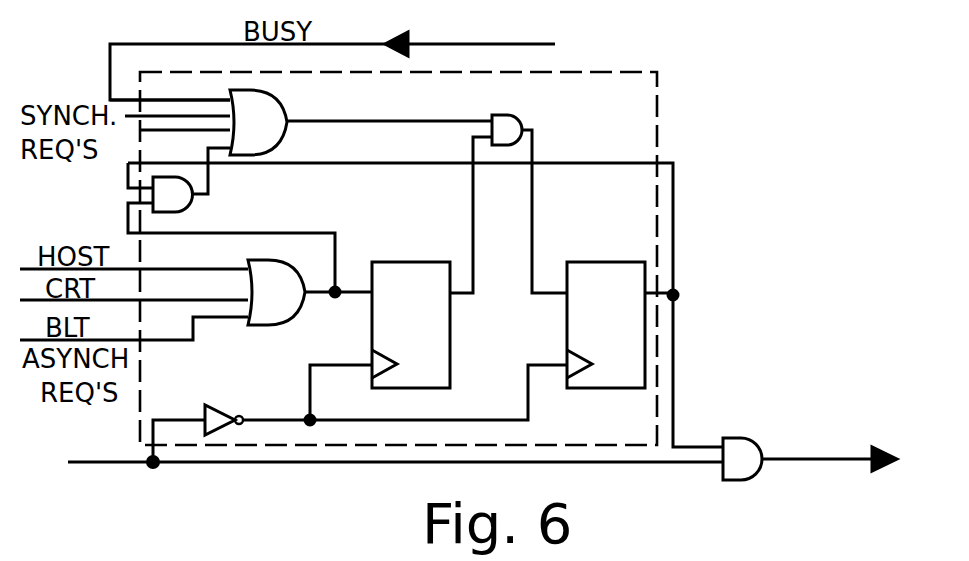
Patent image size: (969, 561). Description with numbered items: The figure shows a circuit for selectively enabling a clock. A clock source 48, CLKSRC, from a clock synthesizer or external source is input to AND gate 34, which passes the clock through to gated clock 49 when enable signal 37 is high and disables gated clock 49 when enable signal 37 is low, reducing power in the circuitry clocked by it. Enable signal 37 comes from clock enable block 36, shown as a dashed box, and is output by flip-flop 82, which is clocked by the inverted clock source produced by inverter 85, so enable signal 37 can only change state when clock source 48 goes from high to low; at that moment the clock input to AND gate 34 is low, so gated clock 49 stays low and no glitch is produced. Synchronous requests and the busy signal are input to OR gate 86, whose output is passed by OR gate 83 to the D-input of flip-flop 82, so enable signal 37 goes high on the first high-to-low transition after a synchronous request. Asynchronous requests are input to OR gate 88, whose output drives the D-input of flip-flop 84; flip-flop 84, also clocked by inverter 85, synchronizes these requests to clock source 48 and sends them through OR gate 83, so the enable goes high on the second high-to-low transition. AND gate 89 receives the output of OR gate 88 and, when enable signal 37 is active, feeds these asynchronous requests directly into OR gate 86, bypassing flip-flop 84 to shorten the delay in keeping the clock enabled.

The AND gate 34 is at (740, 481).
The clock enable block 36 is at (659, 121).
The enable signal 37 is at (677, 381).
The clock source 48 is at (250, 464).
The gated clock 49 is at (817, 463).
The flip-flop 82 is at (597, 262).
The OR gate 83 is at (508, 113).
The flip-flop 84 is at (385, 262).
The inverter 85 is at (214, 405).
The OR gate 86 is at (266, 91).
The OR gate 88 is at (291, 320).
The AND gate 89 is at (190, 209).